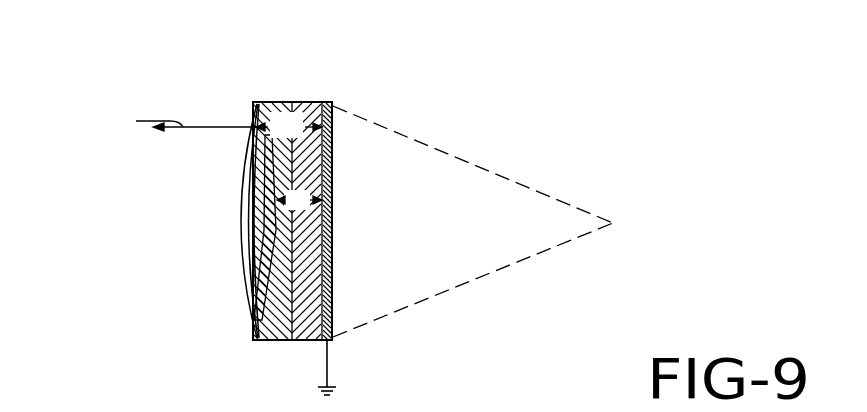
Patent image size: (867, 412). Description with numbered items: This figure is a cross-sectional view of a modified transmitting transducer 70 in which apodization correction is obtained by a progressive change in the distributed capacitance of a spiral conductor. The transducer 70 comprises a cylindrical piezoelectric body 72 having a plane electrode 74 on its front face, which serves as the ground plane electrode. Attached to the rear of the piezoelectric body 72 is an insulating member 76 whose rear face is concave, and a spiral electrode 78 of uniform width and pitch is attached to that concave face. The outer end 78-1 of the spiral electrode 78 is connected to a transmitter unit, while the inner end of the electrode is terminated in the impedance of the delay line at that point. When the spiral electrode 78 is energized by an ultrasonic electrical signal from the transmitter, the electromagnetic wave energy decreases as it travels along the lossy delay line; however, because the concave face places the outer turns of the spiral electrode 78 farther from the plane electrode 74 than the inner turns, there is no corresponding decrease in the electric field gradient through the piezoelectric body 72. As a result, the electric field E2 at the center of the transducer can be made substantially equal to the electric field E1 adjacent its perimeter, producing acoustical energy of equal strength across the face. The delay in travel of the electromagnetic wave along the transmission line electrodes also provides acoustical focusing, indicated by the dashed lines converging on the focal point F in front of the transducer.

The transmitting transducer 70 is at (277, 76).
The cylindrical piezoelectric body 72 is at (308, 102).
The plane electrode 74 is at (333, 174).
The insulating member 76 is at (271, 341).
The spiral electrode 78 is at (250, 177).
The outer end of the spiral electrode 78-1 is at (257, 127).
The electric field adjacent the perimeter E1 is at (289, 126).
The electric field at the center E2 is at (299, 200).
The focal point F is at (614, 223).